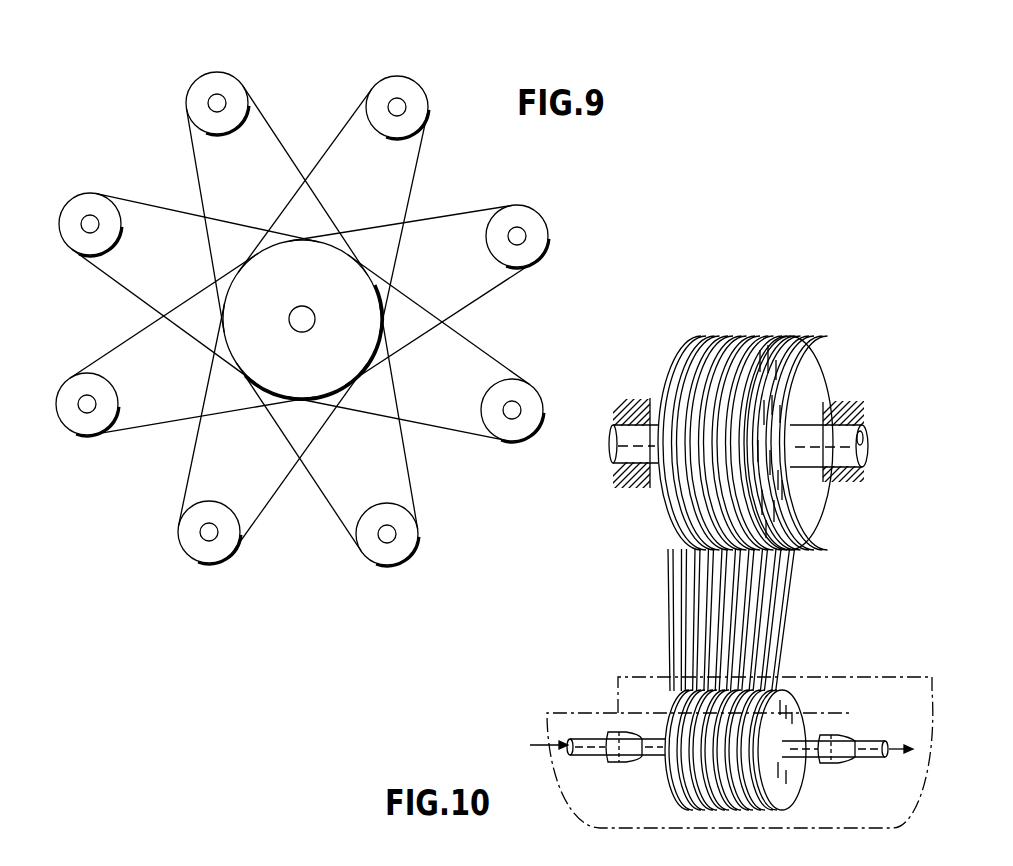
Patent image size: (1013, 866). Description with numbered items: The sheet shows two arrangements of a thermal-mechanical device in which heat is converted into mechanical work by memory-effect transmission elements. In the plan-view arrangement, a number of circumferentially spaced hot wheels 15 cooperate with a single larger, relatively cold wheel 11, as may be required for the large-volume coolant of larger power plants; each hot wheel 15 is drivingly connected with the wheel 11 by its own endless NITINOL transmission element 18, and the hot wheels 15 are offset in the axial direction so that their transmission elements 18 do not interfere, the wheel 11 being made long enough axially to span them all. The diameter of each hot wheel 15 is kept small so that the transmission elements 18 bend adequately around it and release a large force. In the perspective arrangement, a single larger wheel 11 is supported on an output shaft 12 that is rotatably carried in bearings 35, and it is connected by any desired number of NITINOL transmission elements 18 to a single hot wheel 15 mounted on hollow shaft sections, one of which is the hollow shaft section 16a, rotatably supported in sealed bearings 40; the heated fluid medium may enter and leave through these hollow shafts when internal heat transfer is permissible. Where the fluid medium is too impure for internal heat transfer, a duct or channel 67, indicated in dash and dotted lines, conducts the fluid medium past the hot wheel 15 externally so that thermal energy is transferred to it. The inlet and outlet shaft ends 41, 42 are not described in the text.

In FIG. 9, the wheel 11 is at (340, 306).
In FIG. 10, the wheel 11 is at (826, 378).
In FIG. 9, the output shaft 12 is at (313, 330).
In FIG. 10, the output shaft 12 is at (847, 452).
In FIG. 9, the hot wheel 15 is at (90, 203).
In FIG. 10, the hot wheel 15 is at (800, 690).
In FIG. 9, the hollow shaft section 16a is at (527, 241).
In FIG. 9, the NITINOL transmission element 18 is at (290, 160).
In FIG. 10, the NITINOL transmission element 18 is at (752, 637).
In FIG. 10, the bearing 35 is at (845, 420).
In FIG. 10, the sealed bearing 40 is at (627, 733).
In FIG. 10, the input shaft 41 is at (580, 737).
In FIG. 10, the output shaft 42 is at (868, 742).
In FIG. 10, the duct or channel 67 is at (597, 828).